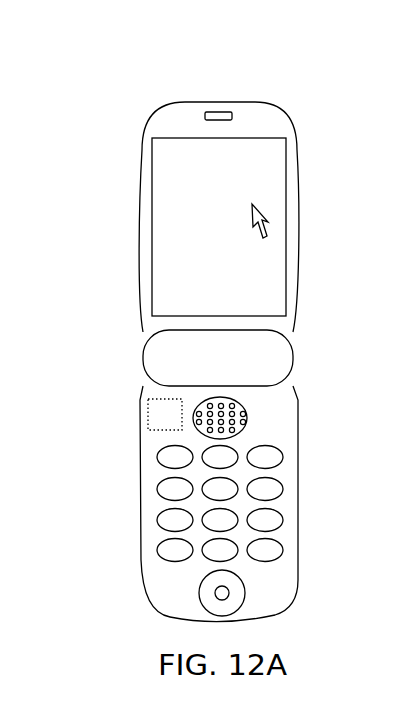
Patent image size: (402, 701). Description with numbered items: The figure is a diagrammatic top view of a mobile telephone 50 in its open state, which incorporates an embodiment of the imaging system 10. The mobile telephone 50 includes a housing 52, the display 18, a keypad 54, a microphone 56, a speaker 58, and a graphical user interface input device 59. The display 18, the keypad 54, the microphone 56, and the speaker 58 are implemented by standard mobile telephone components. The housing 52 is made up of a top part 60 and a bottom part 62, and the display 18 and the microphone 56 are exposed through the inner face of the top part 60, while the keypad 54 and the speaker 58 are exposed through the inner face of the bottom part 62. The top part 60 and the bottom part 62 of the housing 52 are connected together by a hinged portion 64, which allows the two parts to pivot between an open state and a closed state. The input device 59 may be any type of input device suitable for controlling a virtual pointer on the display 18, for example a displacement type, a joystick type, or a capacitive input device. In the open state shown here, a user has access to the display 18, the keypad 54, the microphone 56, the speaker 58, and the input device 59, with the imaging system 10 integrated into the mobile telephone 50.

The mobile telephone 50 is at (82, 127).
The housing 52 is at (302, 262).
The keypad 54 is at (291, 490).
The microphone 56 is at (220, 112).
The speaker 58 is at (248, 417).
The graphical user interface input device 59 is at (243, 590).
The top part 60 is at (140, 228).
The bottom part 62 is at (140, 455).
The hinged portion 64 is at (142, 358).
The imaging system 10 is at (148, 413).
The display 18 is at (229, 188).